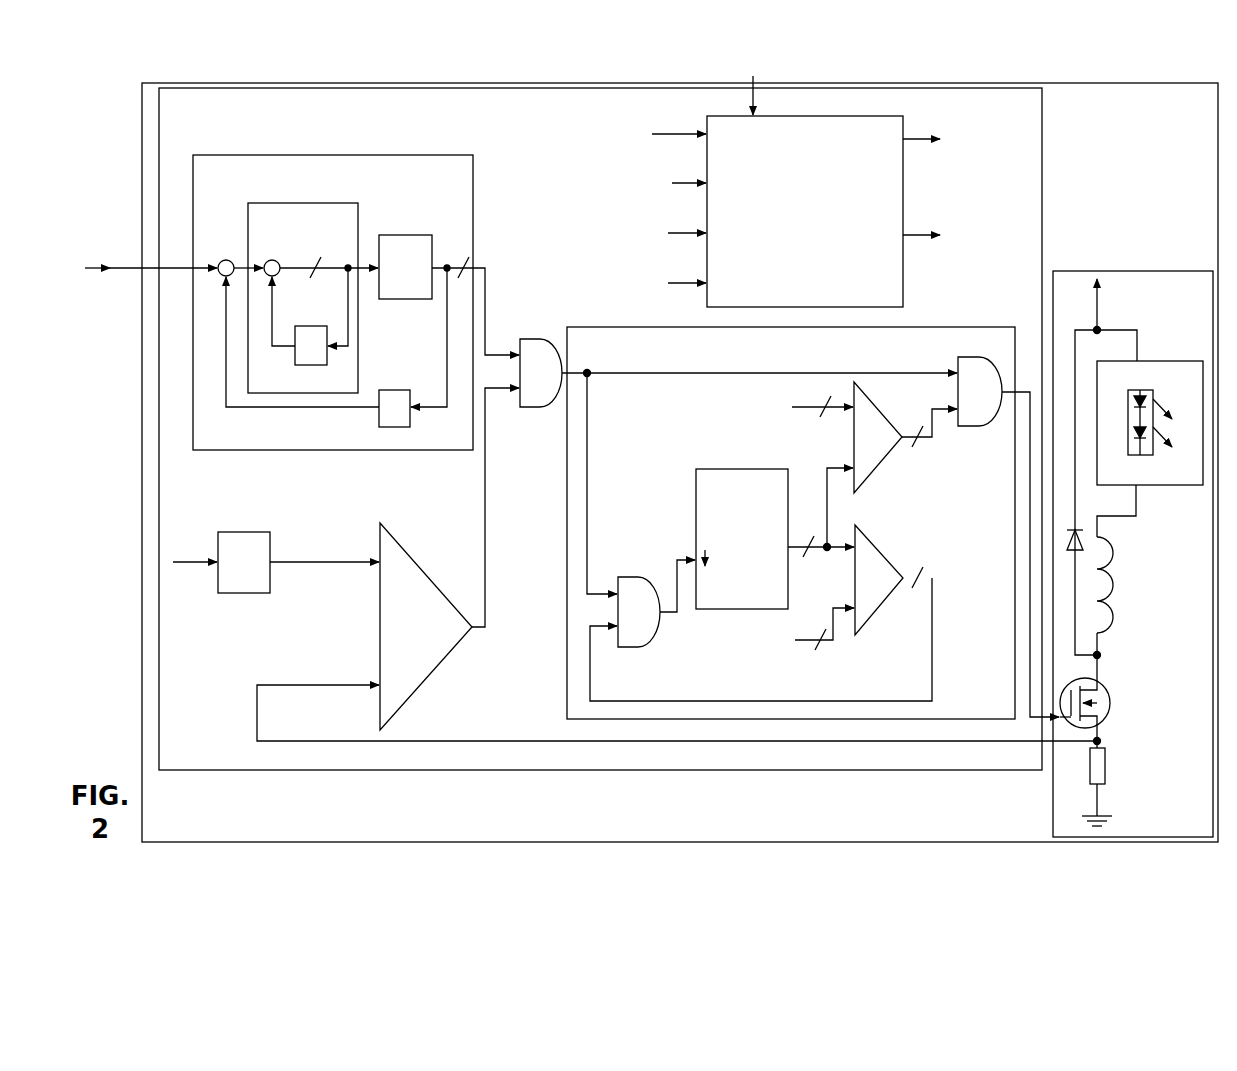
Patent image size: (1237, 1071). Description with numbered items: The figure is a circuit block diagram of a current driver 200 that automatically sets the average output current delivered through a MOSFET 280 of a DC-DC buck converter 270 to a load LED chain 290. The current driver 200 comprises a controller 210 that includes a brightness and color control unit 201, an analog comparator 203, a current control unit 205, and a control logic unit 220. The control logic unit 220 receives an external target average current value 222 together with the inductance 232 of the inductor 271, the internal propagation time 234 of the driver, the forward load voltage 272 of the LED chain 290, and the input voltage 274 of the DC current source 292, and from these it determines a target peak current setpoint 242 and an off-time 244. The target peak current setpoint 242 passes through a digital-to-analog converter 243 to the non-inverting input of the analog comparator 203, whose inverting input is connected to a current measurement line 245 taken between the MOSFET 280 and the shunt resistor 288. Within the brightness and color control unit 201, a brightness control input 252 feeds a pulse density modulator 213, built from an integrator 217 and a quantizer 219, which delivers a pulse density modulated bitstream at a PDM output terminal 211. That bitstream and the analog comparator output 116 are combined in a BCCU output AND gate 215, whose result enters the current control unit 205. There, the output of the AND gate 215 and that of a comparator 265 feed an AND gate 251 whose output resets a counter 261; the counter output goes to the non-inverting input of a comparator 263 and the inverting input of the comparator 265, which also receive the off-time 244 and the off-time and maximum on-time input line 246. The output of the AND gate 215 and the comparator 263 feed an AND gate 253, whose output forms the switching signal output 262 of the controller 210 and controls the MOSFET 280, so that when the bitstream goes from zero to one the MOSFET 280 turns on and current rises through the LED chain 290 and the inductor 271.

The current driver 200 is at (680, 462).
The brightness and color control unit 201 is at (415, 90).
The analog comparator 203 is at (426, 626).
The current control unit 205 is at (791, 523).
The controller 210 is at (600, 429).
The PDM output terminal 211 is at (500, 189).
The pulse density modulator 213 is at (356, 302).
The BCCU output AND gate 215 is at (736, 466).
The integrator 217 is at (313, 298).
The quantizer 219 is at (405, 267).
The control logic unit 220 is at (805, 211).
The target average current value 222 is at (752, 76).
The inductance 232 is at (647, 124).
The internal propagation time 234 is at (612, 184).
The target peak current setpoint 242 is at (592, 405).
The digital-to-analog converter 243 is at (298, 562).
The off-time 244 is at (866, 335).
The current measurement line 245 is at (677, 664).
The off-time and maximum on-time input line 246 is at (776, 642).
The AND gate 251 is at (761, 605).
The brightness control input terminal 252 is at (192, 161).
The AND gate 253 is at (1008, 537).
The counter 261 is at (735, 529).
The switching signal output terminal 262 is at (958, 781).
The comparator 263 is at (905, 442).
The comparator 265 is at (907, 580).
The DC-DC buck converter 270 is at (1133, 465).
The inductor 271 is at (1152, 570).
The forward load voltage 272 is at (631, 244).
The input voltage 274 is at (630, 294).
The MOSFET 280 is at (1132, 693).
The shunt resistor 288 is at (1149, 746).
The LED chain 290 is at (1150, 382).
The DC current source 292 is at (1080, 236).
The analog comparator output 116 is at (514, 564).